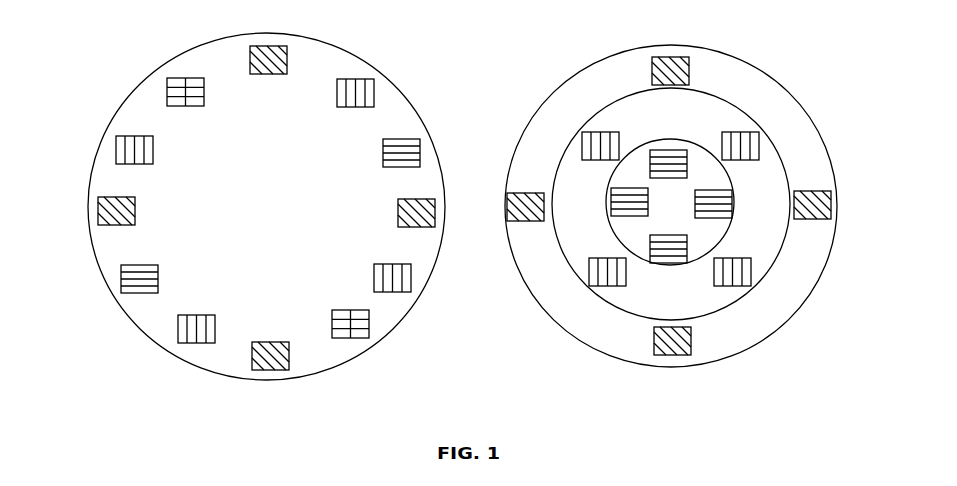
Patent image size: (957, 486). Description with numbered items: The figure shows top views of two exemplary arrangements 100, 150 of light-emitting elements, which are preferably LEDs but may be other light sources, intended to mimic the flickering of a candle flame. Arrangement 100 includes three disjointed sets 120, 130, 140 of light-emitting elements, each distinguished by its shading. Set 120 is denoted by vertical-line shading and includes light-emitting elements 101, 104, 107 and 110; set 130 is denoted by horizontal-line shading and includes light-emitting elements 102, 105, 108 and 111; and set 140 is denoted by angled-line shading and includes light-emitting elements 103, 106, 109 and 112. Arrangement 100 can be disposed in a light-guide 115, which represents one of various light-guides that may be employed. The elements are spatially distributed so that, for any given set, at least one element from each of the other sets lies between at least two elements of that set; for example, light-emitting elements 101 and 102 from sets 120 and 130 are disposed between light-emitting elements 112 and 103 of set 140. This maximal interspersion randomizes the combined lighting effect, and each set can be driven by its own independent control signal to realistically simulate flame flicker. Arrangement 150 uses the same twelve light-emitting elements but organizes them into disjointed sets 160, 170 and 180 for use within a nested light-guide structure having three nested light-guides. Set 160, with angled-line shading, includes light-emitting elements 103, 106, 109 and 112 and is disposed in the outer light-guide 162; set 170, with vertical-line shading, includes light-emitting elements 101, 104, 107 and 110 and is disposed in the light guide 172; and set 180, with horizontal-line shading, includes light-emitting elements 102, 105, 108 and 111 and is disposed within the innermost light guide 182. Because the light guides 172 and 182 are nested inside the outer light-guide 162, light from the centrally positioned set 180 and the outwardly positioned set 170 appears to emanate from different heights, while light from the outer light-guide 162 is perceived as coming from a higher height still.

The arrangement 100 is at (122, 68).
The light-emitting element 101 is at (337, 95).
The light-emitting element 102 is at (383, 152).
The light-emitting element 103 is at (398, 210).
The light-emitting element 104 is at (373, 275).
The light-emitting element 105 is at (335, 310).
The light-emitting element 106 is at (265, 342).
The light-emitting element 107 is at (200, 315).
The light-emitting element 108 is at (157, 270).
The light-emitting element 109 is at (135, 210).
The light-emitting element 110 is at (153, 150).
The light-emitting element 111 is at (190, 107).
The light-emitting element 112 is at (265, 73).
The light-guide 115 is at (170, 355).
The disjointed set 120 is at (382, 78).
The disjointed set 130 is at (404, 126).
The disjointed set 140 is at (300, 48).
The arrangement 150 is at (527, 75).
The disjointed set 160 is at (698, 56).
The outer light-guide 162 is at (780, 85).
The disjointed set 170 is at (736, 291).
The light guide 172 is at (773, 265).
The disjointed set 180 is at (656, 272).
The light guide 182 is at (637, 145).